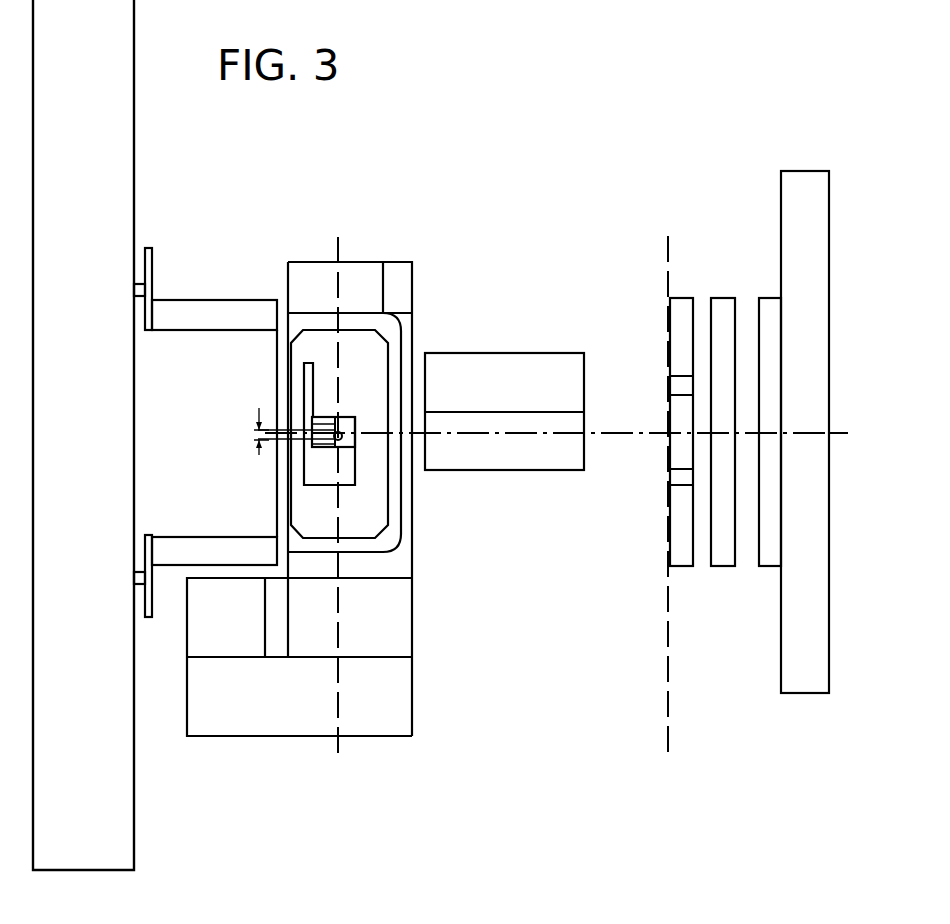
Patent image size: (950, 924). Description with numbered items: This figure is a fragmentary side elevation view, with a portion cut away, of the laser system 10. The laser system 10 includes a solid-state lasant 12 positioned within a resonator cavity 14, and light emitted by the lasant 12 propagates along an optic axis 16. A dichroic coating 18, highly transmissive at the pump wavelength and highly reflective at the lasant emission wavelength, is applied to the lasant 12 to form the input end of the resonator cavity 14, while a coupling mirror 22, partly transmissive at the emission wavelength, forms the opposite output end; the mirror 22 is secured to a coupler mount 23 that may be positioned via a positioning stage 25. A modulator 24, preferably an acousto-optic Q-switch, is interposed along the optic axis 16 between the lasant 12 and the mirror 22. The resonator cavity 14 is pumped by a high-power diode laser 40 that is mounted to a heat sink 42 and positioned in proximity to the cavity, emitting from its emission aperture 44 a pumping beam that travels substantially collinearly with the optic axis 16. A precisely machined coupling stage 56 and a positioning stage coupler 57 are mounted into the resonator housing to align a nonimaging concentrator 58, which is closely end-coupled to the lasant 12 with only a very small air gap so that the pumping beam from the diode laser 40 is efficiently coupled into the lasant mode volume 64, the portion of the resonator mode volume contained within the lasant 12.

The laser system 10 is at (397, 190).
The solid-state lasant 12 is at (340, 416).
The resonator cavity 14 is at (538, 700).
The optic axis 16 is at (837, 432).
The dichroic coating 18 is at (342, 416).
The coupling mirror 22 is at (673, 453).
The coupler mount 23 is at (723, 566).
The modulator 24 is at (540, 352).
The positioning stage 25 is at (808, 694).
The diode laser 40 is at (198, 300).
The heat sink 42 is at (134, 188).
The emission aperture 44 is at (258, 433).
The coupling stage 56 is at (345, 483).
The positioning stage coupler 57 is at (353, 727).
The nonimaging concentrator 58 is at (282, 425).
The lasant mode volume 64 is at (341, 437).